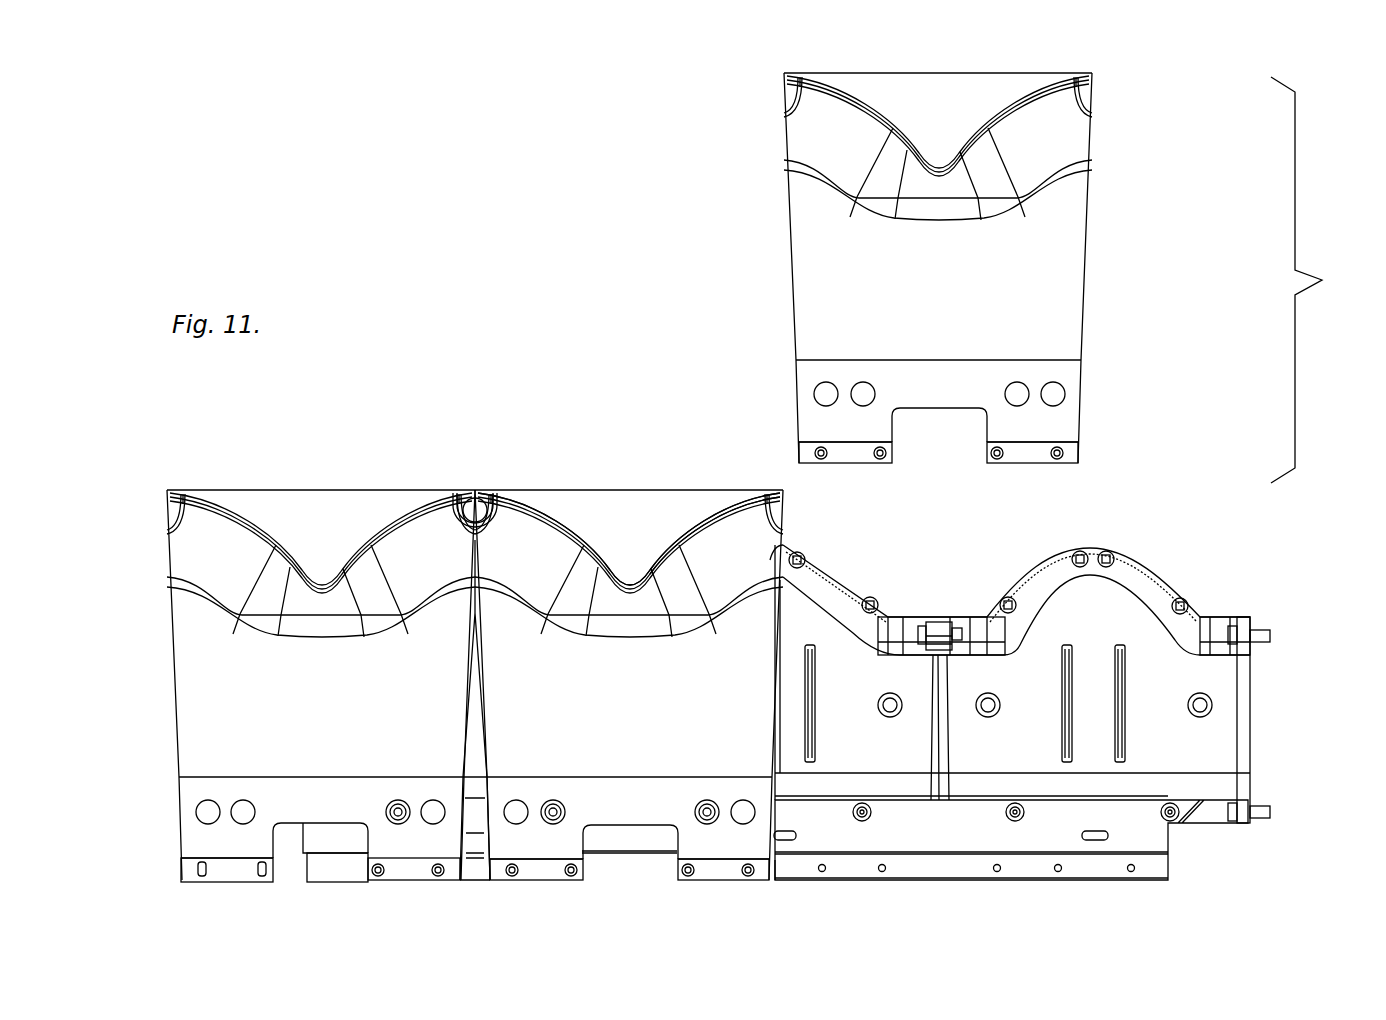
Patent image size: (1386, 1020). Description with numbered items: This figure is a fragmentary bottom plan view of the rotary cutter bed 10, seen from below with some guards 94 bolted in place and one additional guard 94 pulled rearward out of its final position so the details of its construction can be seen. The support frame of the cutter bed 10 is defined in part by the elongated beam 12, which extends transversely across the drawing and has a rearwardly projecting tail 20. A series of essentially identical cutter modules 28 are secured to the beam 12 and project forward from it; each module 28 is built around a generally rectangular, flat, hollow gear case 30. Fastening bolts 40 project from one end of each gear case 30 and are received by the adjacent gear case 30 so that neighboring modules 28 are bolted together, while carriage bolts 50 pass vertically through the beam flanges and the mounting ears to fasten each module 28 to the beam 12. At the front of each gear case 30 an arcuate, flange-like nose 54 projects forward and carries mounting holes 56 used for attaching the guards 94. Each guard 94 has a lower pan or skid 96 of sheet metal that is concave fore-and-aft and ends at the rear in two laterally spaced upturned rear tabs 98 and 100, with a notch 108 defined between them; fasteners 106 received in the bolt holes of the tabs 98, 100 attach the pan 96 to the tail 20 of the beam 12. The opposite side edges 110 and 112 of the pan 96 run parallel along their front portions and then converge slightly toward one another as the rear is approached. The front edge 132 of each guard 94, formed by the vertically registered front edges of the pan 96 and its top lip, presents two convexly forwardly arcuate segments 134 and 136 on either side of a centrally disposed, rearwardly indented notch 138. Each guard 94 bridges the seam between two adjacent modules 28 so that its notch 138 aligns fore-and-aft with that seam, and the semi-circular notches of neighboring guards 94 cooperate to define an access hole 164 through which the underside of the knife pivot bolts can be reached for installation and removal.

The rotary cutter bed 10 is at (1292, 740).
The elongated beam 12 is at (1182, 847).
The rearwardly projecting tail 20 is at (958, 860).
The cutter module 28 is at (870, 588).
The gear case 30 is at (1232, 688).
The fastening bolts 40 is at (940, 635).
The carriage bolts 50 is at (705, 812).
The arcuate flange-like nose 54 is at (805, 560).
The mounting holes 56 is at (1083, 555).
The guard 94 is at (940, 135).
The lower pan or skid 96 is at (772, 642).
The rear tab 98 is at (850, 425).
The rear tab 100 is at (1042, 428).
The fasteners 106 is at (776, 878).
The notch 108 is at (928, 410).
The side edge 110 is at (790, 242).
The side edge 112 is at (1093, 238).
The front edge of guard 132 is at (695, 508).
The convexly forwardly arcuate segment 134 is at (525, 500).
The convexly forwardly arcuate segment 136 is at (710, 495).
The rearwardly indented notch 138 is at (630, 580).
The access hole 164 is at (478, 508).